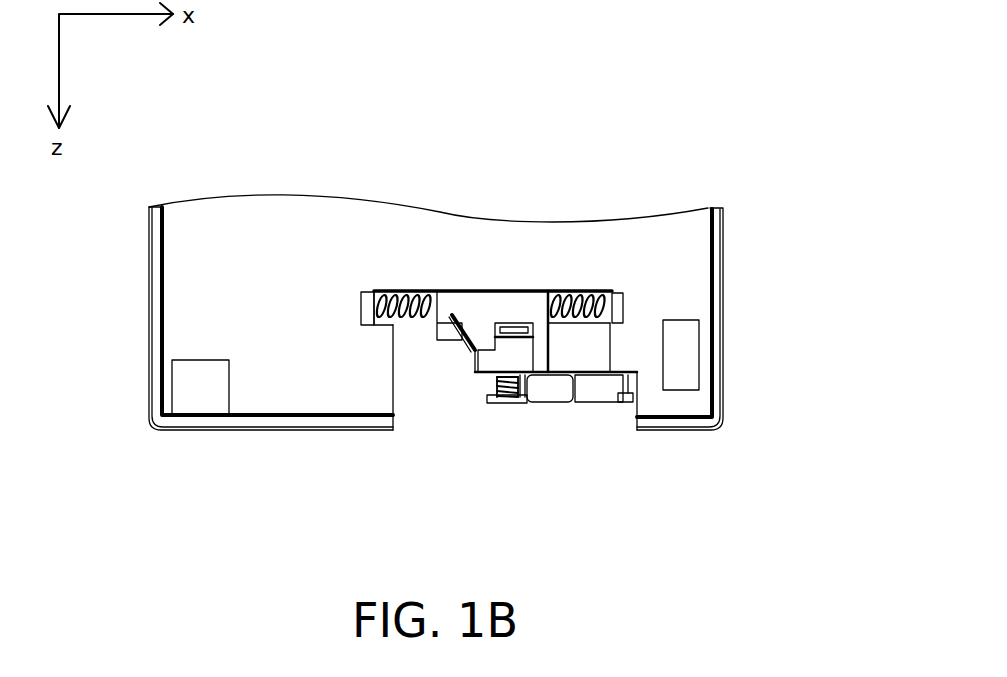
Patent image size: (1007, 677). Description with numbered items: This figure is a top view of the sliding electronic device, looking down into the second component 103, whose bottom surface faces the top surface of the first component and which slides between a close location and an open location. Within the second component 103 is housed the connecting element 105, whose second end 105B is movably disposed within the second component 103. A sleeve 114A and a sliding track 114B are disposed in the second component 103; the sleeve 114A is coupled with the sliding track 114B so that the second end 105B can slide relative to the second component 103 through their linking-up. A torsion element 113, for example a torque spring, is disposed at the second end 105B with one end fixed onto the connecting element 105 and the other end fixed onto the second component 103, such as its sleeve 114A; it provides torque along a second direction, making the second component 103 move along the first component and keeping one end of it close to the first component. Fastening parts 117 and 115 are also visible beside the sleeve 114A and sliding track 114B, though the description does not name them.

The second component 103 is at (149, 311).
The screw 117 is at (390, 293).
The sleeve 114A is at (472, 289).
The sliding track 114B is at (607, 298).
The screw 115 is at (562, 293).
The torsion element 113 is at (490, 377).
The second end 105B is at (493, 402).
The connecting element 105 is at (555, 402).